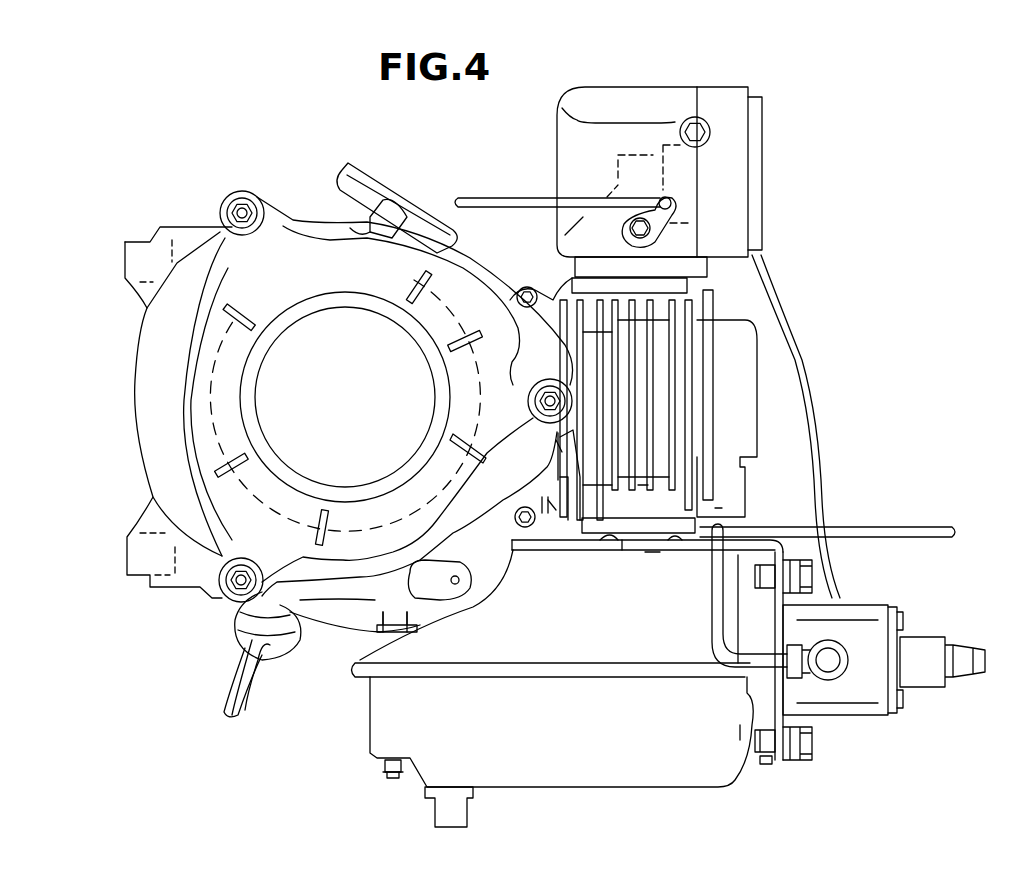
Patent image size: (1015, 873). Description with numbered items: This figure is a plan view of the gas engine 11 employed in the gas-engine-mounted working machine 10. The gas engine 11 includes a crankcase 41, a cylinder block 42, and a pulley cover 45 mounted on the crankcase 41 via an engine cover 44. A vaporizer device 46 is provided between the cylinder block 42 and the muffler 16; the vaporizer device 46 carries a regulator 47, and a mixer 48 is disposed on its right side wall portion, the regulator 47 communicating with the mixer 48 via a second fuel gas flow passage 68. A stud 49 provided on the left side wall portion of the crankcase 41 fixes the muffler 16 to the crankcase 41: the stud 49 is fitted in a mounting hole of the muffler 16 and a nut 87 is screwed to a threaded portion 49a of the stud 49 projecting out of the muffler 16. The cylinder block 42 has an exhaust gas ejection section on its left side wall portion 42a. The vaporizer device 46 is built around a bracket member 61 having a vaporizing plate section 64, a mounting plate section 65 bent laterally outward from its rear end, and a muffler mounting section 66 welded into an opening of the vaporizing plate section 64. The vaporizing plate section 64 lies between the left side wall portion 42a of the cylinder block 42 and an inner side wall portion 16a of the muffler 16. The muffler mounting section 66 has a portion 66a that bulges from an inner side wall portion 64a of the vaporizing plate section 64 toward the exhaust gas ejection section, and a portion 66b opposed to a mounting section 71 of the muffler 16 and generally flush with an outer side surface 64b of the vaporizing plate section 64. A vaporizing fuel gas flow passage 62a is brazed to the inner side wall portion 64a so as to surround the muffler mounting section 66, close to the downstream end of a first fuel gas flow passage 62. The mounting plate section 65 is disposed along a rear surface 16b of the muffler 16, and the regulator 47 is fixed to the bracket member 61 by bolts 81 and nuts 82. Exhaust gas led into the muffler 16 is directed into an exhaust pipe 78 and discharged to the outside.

The gas-engine-mounted working machine 10 is at (852, 100).
The gas engine 11 is at (808, 250).
The muffler 16 is at (603, 780).
The inner side wall portion 16a is at (650, 557).
The rear surface 16b is at (740, 732).
The crankcase 41 is at (347, 600).
The cylinder block 42 is at (709, 368).
The left side wall portion 42a is at (640, 485).
The engine cover 44 is at (142, 356).
The pulley cover 45 is at (328, 258).
The vaporizer device 46 is at (724, 508).
The regulator 47 is at (870, 627).
The mixer 48 is at (637, 97).
The stud 49 is at (397, 620).
The threaded portion 49a is at (393, 779).
The bracket member 61 is at (766, 532).
The first fuel gas flow passage 62 is at (927, 525).
The vaporizing fuel gas flow passage 62a is at (562, 450).
The vaporizing plate section 64 is at (318, 528).
The inner side wall portion 64a is at (553, 510).
The outer side surface 64b is at (553, 553).
The mounting plate section 65 is at (762, 695).
The muffler mounting section 66 is at (645, 558).
The portion opposed to exhaust gas ejection section 66a is at (590, 555).
The portion opposed to mounting section 66b is at (674, 554).
The second fuel gas flow passage 68 is at (798, 352).
The mounting section 71 is at (621, 555).
The exhaust pipe 78 is at (468, 816).
The bolts 81 is at (810, 578).
The nuts 82 is at (765, 762).
The nut 87 is at (378, 766).